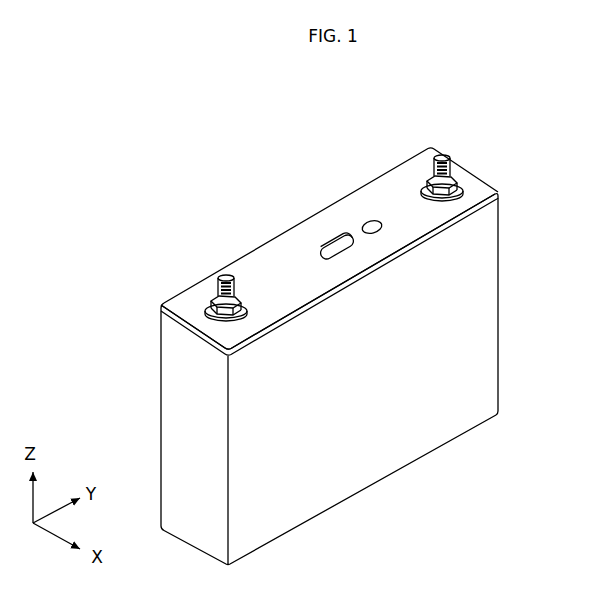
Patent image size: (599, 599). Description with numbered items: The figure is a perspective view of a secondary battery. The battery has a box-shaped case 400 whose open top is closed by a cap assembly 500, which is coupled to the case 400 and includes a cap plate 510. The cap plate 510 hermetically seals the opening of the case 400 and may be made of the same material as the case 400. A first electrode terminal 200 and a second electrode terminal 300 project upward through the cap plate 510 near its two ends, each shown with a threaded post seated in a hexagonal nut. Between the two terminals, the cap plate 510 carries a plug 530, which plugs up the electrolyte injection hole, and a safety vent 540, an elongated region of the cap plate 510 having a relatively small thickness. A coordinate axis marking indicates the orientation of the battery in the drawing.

The first electrode terminal 200 is at (217, 273).
The second electrode terminal 300 is at (451, 151).
The case 400 is at (498, 275).
The cap assembly 500 is at (288, 231).
The cap plate 510 is at (258, 265).
The plug 530 is at (371, 221).
The safety vent 540 is at (335, 241).